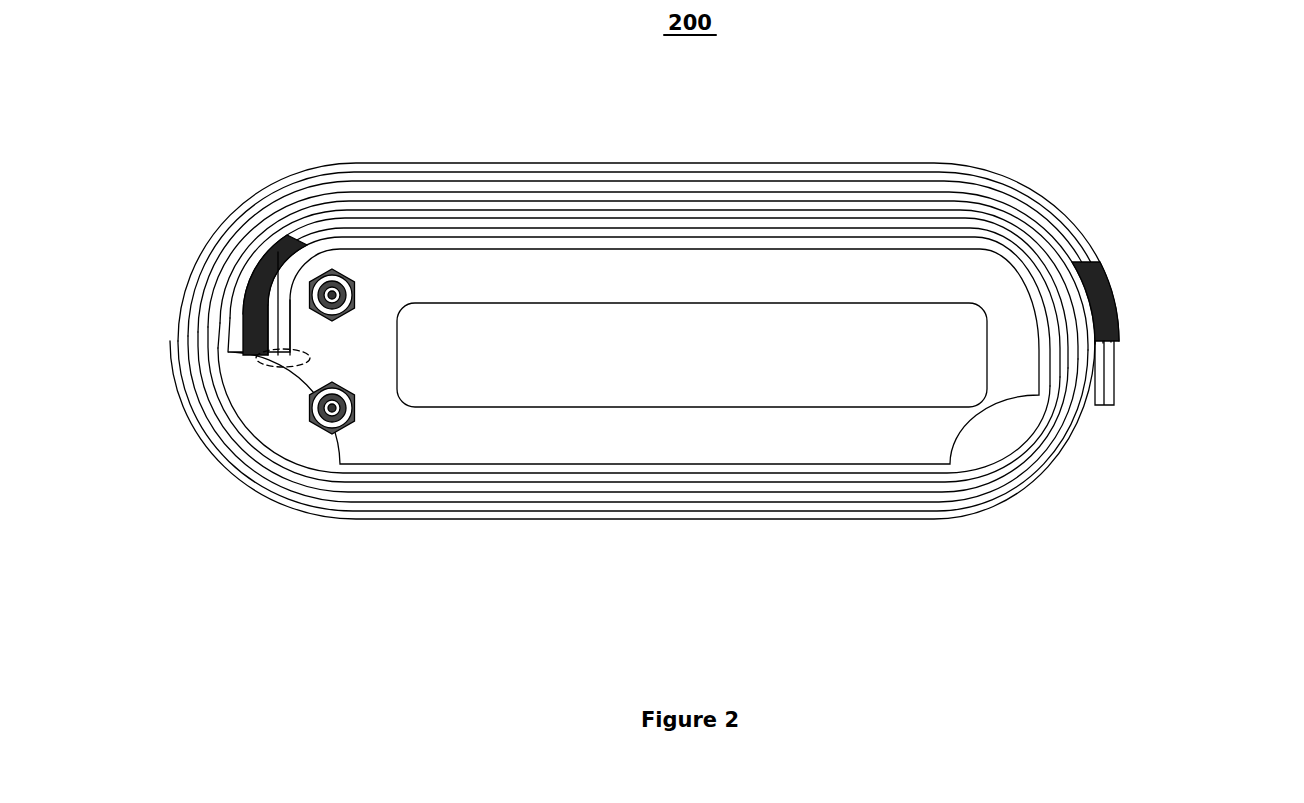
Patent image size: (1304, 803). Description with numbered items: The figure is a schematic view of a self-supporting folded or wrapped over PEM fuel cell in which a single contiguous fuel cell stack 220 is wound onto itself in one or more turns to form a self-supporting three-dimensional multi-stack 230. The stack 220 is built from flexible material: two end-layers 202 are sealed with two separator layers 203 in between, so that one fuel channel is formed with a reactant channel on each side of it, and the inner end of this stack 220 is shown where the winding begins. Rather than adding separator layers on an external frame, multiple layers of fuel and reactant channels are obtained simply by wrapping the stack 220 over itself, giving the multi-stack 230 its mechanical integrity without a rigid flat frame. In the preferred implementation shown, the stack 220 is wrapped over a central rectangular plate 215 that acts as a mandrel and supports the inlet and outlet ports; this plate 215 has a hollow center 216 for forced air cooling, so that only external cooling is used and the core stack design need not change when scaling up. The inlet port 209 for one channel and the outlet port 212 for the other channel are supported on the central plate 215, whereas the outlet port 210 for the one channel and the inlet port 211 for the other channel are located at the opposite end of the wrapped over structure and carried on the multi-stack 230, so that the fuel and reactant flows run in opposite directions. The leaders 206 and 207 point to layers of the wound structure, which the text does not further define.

The end-layer 202 is at (262, 314).
The separator layer 203 is at (300, 246).
The separator layer 206 is at (335, 230).
The outer layer 207 is at (384, 243).
The inlet port 209 is at (357, 308).
The outlet port 210 is at (1118, 332).
The inlet port 211 is at (1104, 373).
The outlet port 212 is at (358, 417).
The central rectangular plate 215 is at (973, 430).
The hollow center 216 is at (660, 385).
The contiguous fuel cell stack 220 is at (268, 365).
The self-supporting three-dimensional multi-stack 230 is at (520, 522).